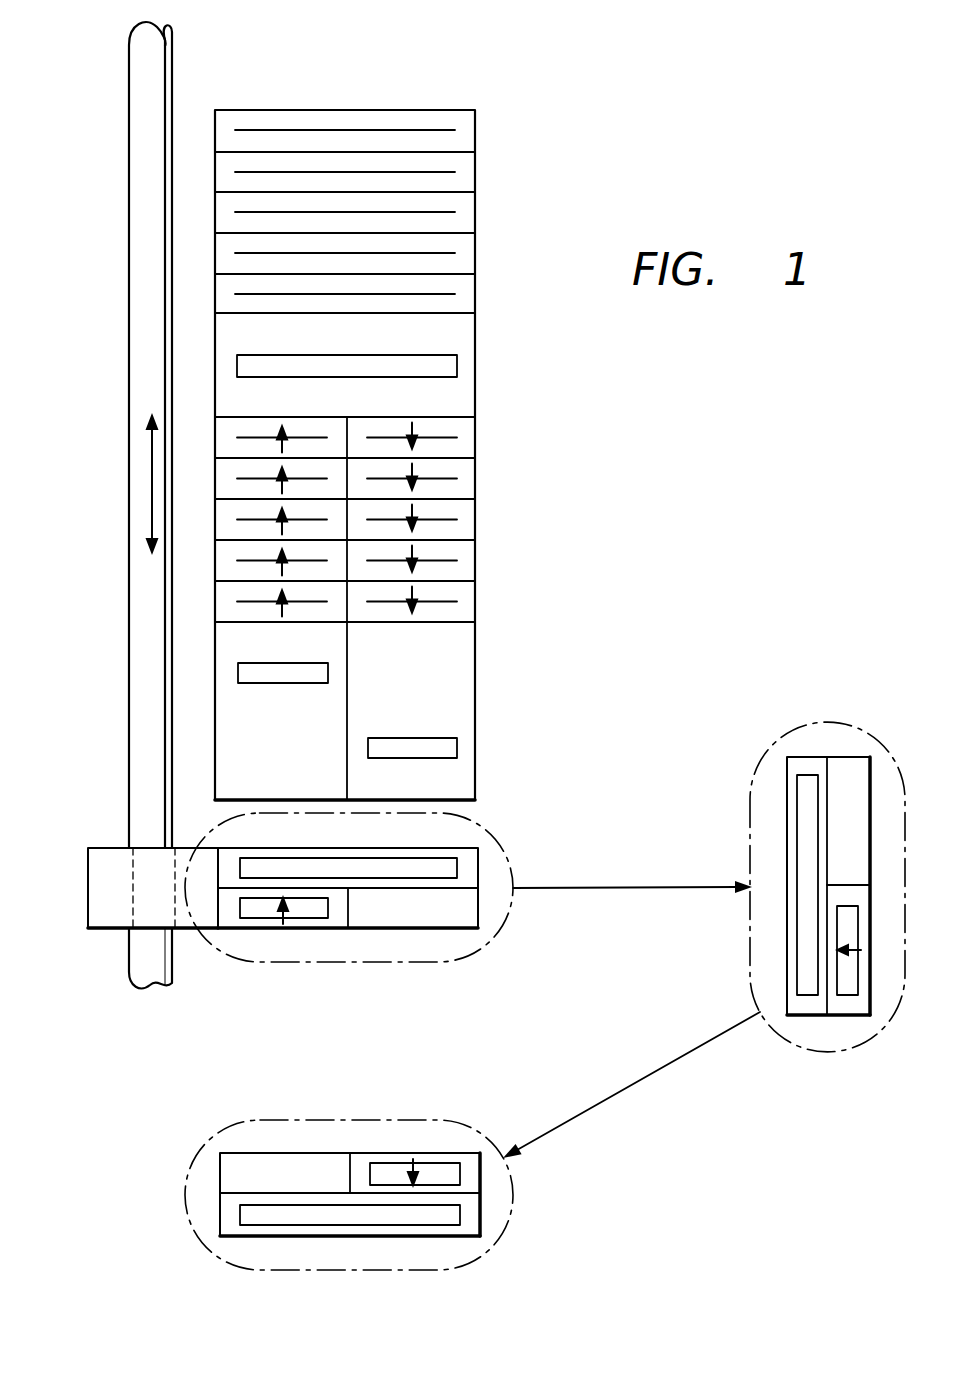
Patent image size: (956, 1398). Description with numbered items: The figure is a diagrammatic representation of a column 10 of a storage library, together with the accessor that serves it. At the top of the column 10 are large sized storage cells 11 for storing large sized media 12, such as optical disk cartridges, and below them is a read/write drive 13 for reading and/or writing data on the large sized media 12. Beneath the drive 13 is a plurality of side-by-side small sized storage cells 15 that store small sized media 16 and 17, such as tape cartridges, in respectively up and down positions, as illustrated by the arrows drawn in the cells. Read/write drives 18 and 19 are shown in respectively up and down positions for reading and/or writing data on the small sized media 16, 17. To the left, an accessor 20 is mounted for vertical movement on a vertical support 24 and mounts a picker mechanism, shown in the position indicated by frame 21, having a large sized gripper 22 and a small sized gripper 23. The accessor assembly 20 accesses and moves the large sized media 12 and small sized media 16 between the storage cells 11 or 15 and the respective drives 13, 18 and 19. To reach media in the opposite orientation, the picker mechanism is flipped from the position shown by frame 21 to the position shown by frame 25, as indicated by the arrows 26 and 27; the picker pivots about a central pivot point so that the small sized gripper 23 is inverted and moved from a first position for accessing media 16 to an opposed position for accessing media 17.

The column 10 is at (370, 65).
The large sized storage cells 11 is at (468, 123).
The large sized media 12 is at (268, 128).
The read/write drive 13 is at (447, 367).
The small sized storage cells 15 is at (306, 583).
The small sized media 16 is at (247, 438).
The small sized media 17 is at (450, 558).
The read/write drive 18 is at (287, 677).
The read/write drive 19 is at (452, 747).
The accessor 20 is at (88, 888).
The frame 21 is at (371, 904).
The large sized gripper 22 is at (453, 868).
The small sized gripper 23 is at (267, 913).
The vertical support 24 is at (130, 493).
The frame 25 is at (183, 1192).
The arrow 26 is at (635, 885).
The arrow 27 is at (624, 1086).